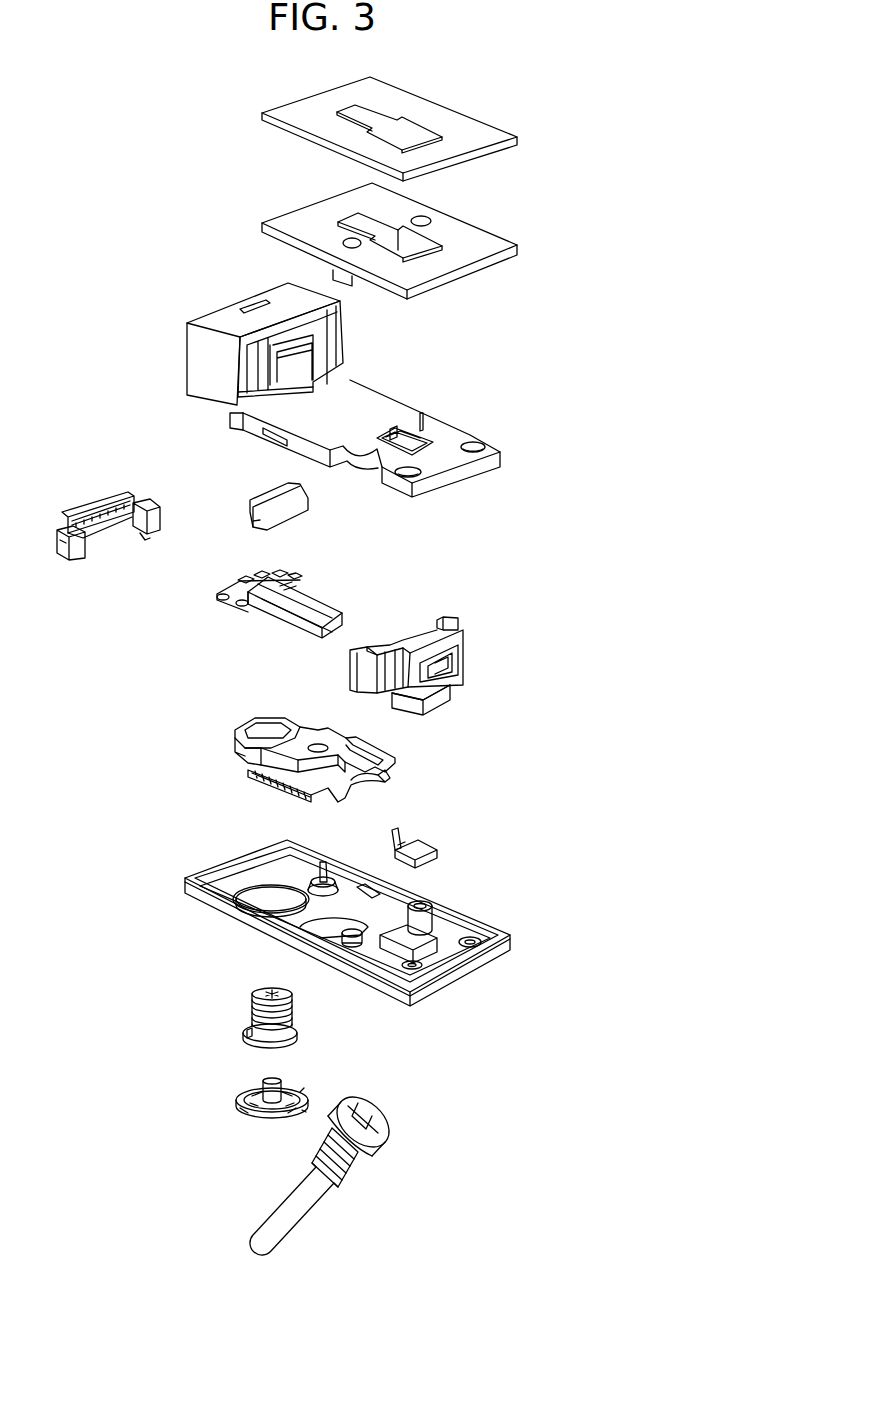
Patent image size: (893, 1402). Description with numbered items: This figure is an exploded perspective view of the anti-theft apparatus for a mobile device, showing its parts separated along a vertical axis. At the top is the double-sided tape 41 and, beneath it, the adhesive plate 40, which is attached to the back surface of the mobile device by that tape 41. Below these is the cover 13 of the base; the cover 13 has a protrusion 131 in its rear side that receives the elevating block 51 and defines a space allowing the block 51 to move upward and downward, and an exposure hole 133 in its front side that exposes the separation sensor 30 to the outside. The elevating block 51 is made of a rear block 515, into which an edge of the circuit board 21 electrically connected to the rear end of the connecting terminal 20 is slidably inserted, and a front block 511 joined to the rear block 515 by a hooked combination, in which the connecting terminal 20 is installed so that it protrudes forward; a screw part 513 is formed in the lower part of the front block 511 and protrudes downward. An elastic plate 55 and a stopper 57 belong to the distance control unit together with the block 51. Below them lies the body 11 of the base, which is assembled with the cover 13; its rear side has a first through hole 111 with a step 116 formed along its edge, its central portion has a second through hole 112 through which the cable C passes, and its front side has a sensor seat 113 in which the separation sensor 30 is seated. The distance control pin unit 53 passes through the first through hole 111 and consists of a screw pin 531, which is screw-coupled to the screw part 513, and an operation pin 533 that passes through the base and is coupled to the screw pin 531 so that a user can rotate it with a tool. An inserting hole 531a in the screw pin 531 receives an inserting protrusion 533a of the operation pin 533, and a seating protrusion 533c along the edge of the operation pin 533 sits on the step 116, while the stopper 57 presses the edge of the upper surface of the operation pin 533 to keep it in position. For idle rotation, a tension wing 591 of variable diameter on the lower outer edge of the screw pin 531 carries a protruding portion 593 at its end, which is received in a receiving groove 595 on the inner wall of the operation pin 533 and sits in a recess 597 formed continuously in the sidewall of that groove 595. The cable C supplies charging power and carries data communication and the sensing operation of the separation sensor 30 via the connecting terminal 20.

The double-sided tape 41 is at (480, 132).
The adhesive plate 40 is at (480, 240).
The cover 13 is at (275, 357).
The protrusion 131 is at (287, 300).
The exposure hole 133 is at (403, 428).
The rear block 515 is at (95, 563).
The elastic plate 55 is at (293, 495).
The connecting terminal 20 is at (288, 559).
The circuit board 21 is at (240, 583).
The elevating block 51 is at (330, 628).
The front block 511 is at (447, 620).
The screw part 513 is at (450, 693).
The stopper 57 is at (293, 743).
The separation sensor 30 is at (407, 843).
The body 11 is at (301, 888).
The first through hole 111 is at (277, 903).
The step 116 is at (278, 893).
The second through hole 112 is at (327, 927).
The sensor seat 113 is at (420, 930).
The distance control pin unit 53 is at (303, 1060).
The screw pin 531 is at (278, 998).
The inserting hole 531a is at (270, 995).
The tension wing 591 is at (225, 984).
The protruding portion 593 is at (248, 1030).
The operation pin 533 is at (290, 1111).
The inserting protrusion 533a is at (263, 1095).
The seating protrusion 533c is at (257, 1117).
The receiving groove 595 is at (287, 1088).
The recess 597 is at (310, 1113).
The cable C is at (290, 1210).